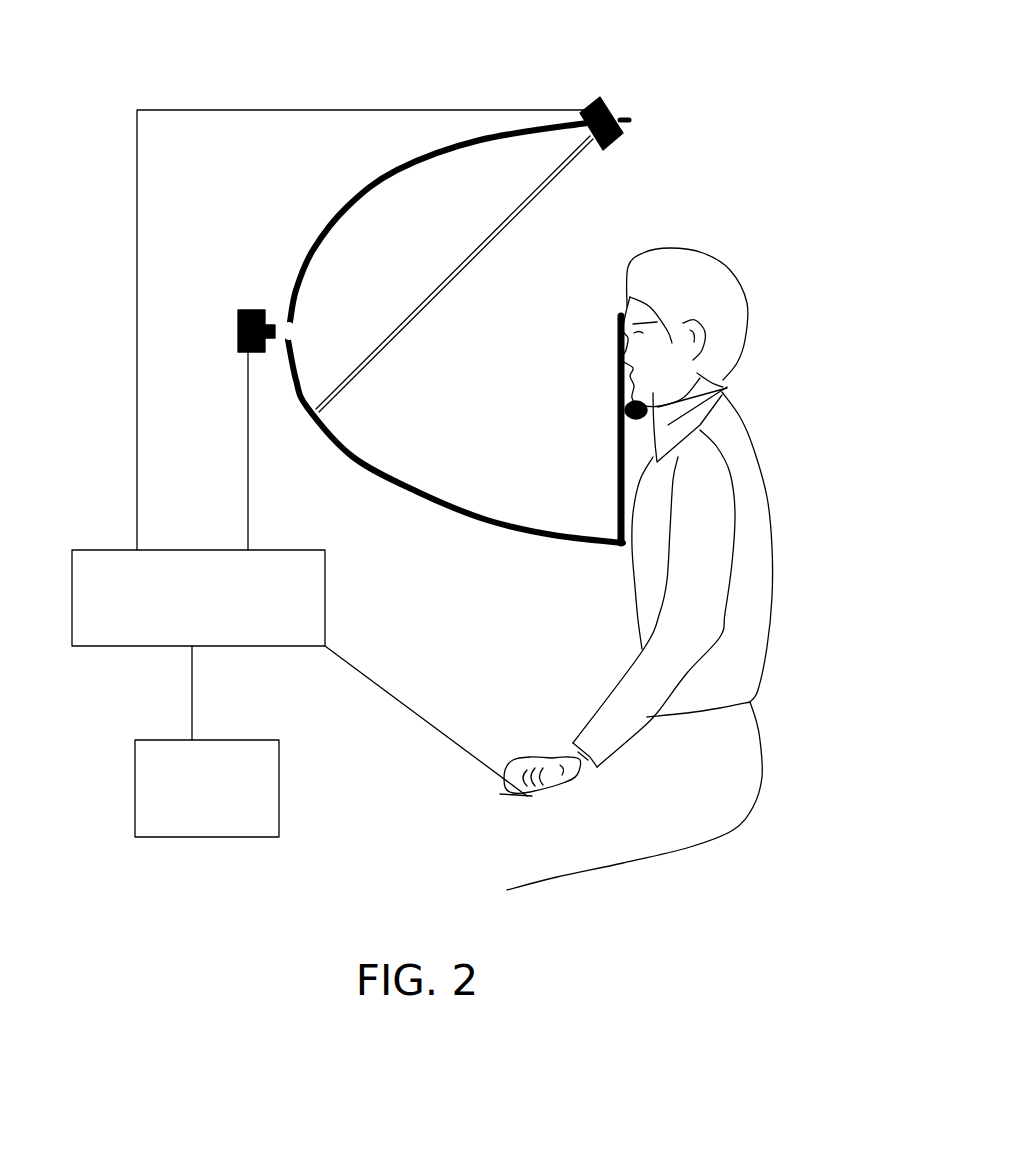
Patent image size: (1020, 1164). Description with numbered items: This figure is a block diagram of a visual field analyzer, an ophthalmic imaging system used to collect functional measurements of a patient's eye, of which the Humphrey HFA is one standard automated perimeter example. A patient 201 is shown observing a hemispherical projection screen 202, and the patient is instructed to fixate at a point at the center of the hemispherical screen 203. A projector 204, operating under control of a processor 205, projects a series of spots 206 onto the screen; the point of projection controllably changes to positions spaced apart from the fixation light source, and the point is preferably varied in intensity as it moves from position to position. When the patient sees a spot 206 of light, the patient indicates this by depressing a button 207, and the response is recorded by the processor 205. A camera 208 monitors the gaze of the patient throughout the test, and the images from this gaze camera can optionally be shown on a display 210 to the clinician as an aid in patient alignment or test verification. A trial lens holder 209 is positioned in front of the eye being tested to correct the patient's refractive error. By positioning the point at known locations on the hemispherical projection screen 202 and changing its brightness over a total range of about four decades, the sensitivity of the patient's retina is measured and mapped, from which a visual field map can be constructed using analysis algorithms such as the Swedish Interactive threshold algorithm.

The patient 201 is at (748, 272).
The hemispherical projection screen 202 is at (400, 168).
The center of the hemispherical screen 203 is at (294, 329).
The projector 204 is at (613, 100).
The processor 205 is at (97, 648).
The spot 206 is at (306, 425).
The button 207 is at (507, 755).
The camera 208 is at (247, 305).
The trial lens holder 209 is at (620, 305).
The display 210 is at (133, 786).